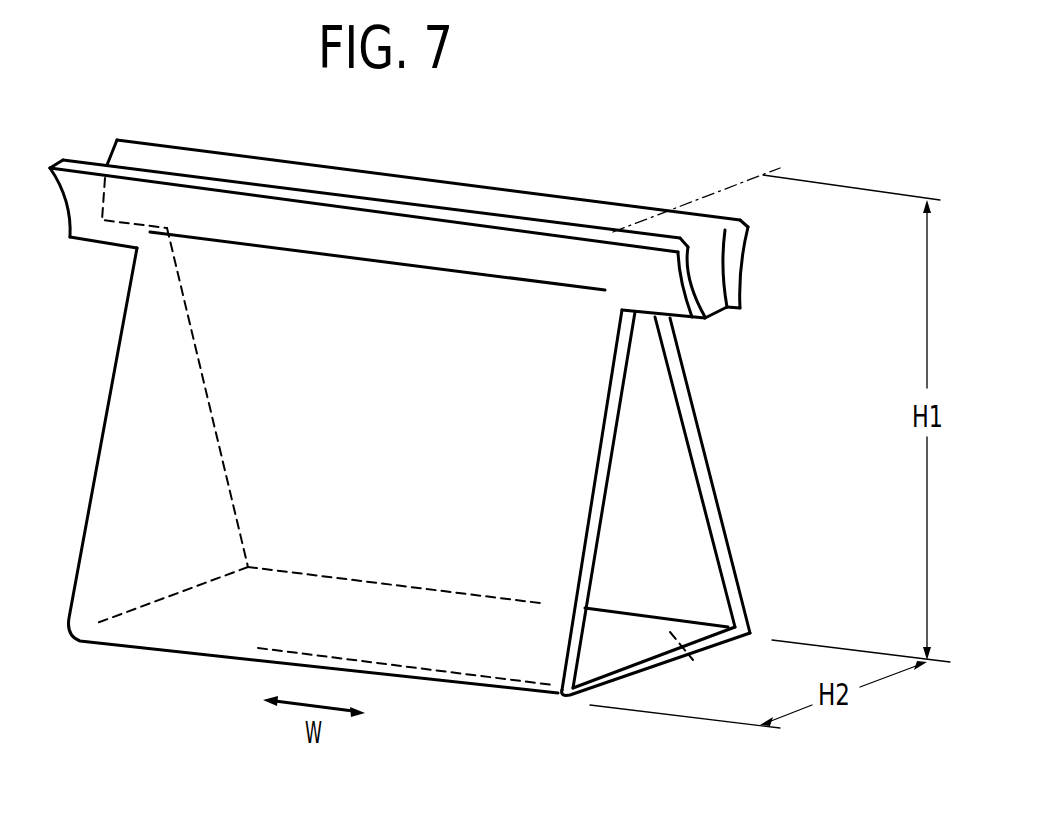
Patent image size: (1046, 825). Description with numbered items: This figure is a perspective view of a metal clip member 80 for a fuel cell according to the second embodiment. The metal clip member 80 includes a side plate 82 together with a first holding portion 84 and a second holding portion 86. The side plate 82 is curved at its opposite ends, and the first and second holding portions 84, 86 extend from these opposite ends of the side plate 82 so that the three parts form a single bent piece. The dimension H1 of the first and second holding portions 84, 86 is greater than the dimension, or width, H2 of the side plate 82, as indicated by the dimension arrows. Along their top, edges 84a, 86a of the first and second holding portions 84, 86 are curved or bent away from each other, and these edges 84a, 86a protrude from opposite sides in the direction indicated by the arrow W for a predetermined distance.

The metal clip member 80 is at (649, 123).
The side plate 82 is at (690, 653).
The first holding portion 84 is at (685, 390).
The edge of first holding portion 84a is at (542, 215).
The second holding portion 86 is at (602, 477).
The edge of second holding portion 86a is at (366, 226).